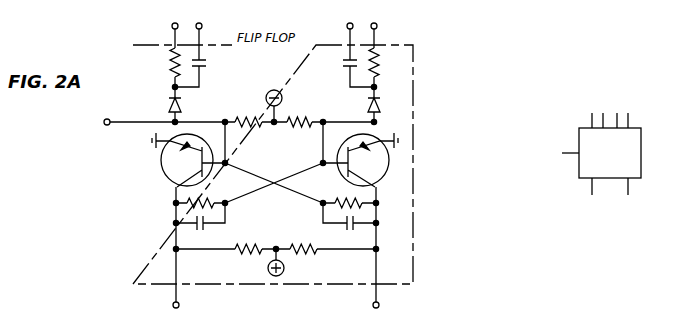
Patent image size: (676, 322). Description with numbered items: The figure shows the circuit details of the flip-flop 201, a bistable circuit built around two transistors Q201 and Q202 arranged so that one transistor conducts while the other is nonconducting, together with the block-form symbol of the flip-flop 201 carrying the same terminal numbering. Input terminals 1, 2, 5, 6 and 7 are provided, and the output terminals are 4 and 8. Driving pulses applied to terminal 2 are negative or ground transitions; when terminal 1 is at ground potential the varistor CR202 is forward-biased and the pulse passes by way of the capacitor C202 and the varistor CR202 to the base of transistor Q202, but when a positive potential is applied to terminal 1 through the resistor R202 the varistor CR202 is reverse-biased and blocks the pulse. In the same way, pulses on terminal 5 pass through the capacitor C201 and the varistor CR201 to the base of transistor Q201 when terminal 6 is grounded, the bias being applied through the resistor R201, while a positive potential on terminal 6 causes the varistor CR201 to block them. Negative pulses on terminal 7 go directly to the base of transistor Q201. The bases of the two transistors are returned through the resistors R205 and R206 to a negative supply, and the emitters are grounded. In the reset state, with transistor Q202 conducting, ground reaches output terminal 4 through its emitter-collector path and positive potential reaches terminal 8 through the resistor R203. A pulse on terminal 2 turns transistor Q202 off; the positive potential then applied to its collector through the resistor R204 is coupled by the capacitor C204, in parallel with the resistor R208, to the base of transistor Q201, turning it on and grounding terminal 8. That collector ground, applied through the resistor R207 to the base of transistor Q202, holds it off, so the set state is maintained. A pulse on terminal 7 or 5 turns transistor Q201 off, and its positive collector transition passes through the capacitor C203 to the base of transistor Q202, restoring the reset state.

The flip-flop 201 is at (579, 168).
The input terminal 1 is at (496, 73).
The input terminal 2 is at (477, 73).
The output terminal 4 is at (505, 245).
The input terminal 5 is at (394, 73).
The input terminal 6 is at (376, 73).
The input terminal 7 is at (341, 129).
The output terminal 8 is at (387, 245).
The resistor R201 is at (169, 68).
The resistor R202 is at (380, 68).
The resistor R203 is at (226, 260).
The resistor R204 is at (326, 260).
The resistor R205 is at (246, 134).
The resistor R206 is at (300, 134).
The resistor R207 is at (192, 197).
The resistor R208 is at (344, 197).
The capacitor C201 is at (207, 72).
The capacitor C202 is at (342, 72).
The capacitor C203 is at (203, 236).
The capacitor C204 is at (345, 236).
The varistor CR201 is at (180, 104).
The varistor CR202 is at (369, 104).
The transistor Q201 is at (160, 173).
The transistor Q202 is at (377, 178).